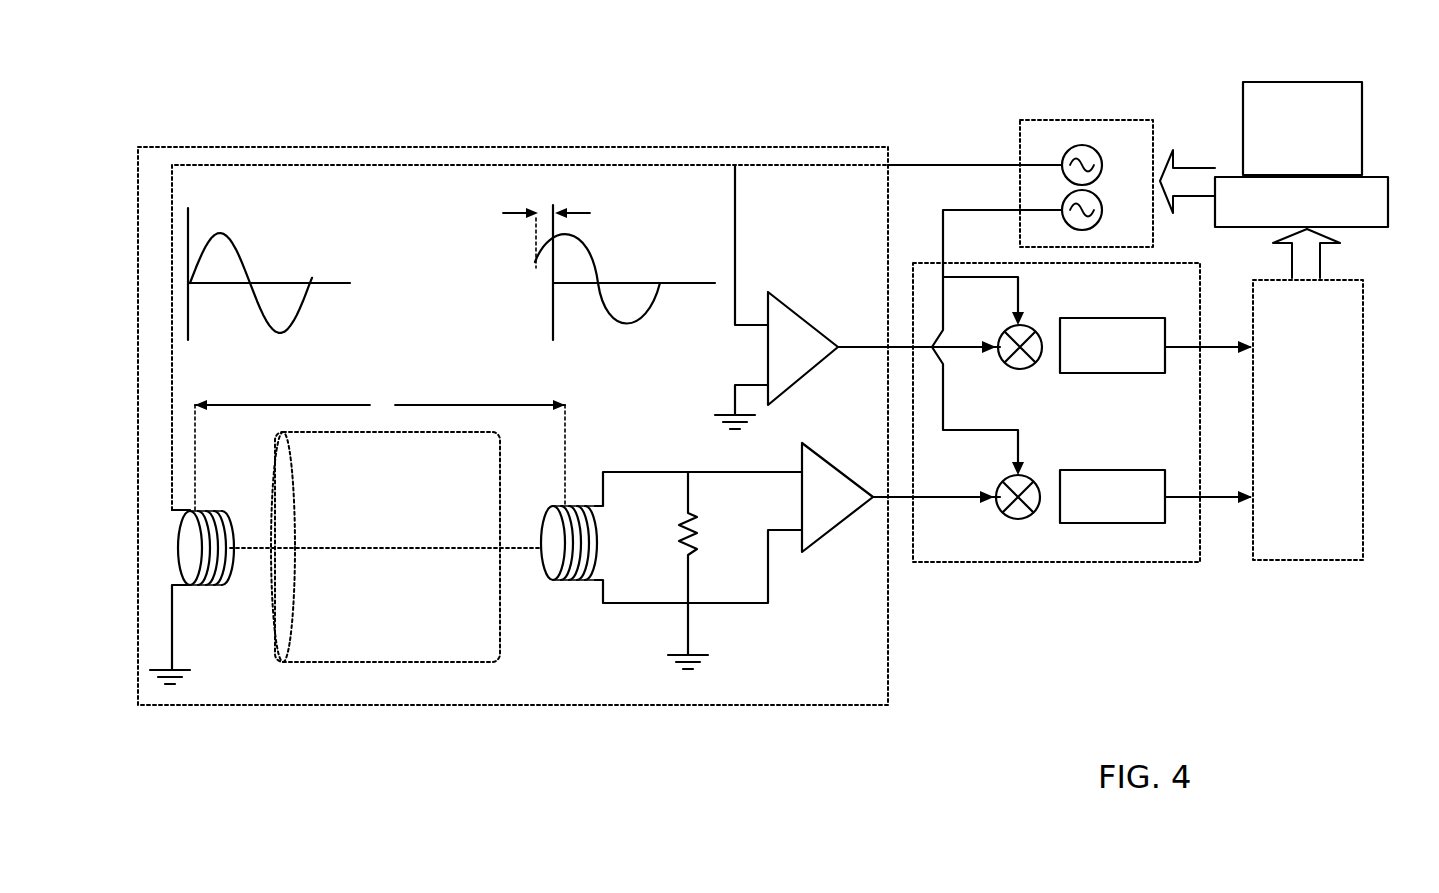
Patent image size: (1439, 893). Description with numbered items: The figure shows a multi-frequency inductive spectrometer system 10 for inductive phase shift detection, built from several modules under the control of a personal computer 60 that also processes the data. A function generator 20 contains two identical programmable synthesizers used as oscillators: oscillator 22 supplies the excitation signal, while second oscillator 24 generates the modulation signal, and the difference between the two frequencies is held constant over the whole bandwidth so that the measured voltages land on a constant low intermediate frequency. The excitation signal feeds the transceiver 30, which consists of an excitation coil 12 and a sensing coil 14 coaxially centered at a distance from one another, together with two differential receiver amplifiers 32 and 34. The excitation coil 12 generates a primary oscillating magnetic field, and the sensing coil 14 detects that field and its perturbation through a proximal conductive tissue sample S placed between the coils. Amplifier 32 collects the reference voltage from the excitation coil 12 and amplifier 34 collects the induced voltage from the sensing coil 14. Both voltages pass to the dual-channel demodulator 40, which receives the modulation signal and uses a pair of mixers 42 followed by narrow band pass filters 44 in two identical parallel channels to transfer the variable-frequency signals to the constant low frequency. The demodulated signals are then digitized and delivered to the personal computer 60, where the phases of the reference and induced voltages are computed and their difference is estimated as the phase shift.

The multi-frequency inductive spectrometer system 10 is at (747, 105).
The excitation coil 12 is at (185, 548).
The sensing coil 14 is at (557, 552).
The conductive tissue sample S is at (378, 628).
The function generator 20 is at (1077, 62).
The oscillator 22 is at (1102, 170).
The second oscillator 24 is at (1104, 216).
The transceiver 30 is at (352, 118).
The differential receiver amplifier 32 is at (806, 334).
The differential receiver amplifier 34 is at (845, 512).
The dual-channel demodulator 40 is at (1018, 652).
The mixer 42 is at (1020, 470).
The narrow band pass filter 44 is at (1112, 470).
The personal computer 60 is at (1337, 130).